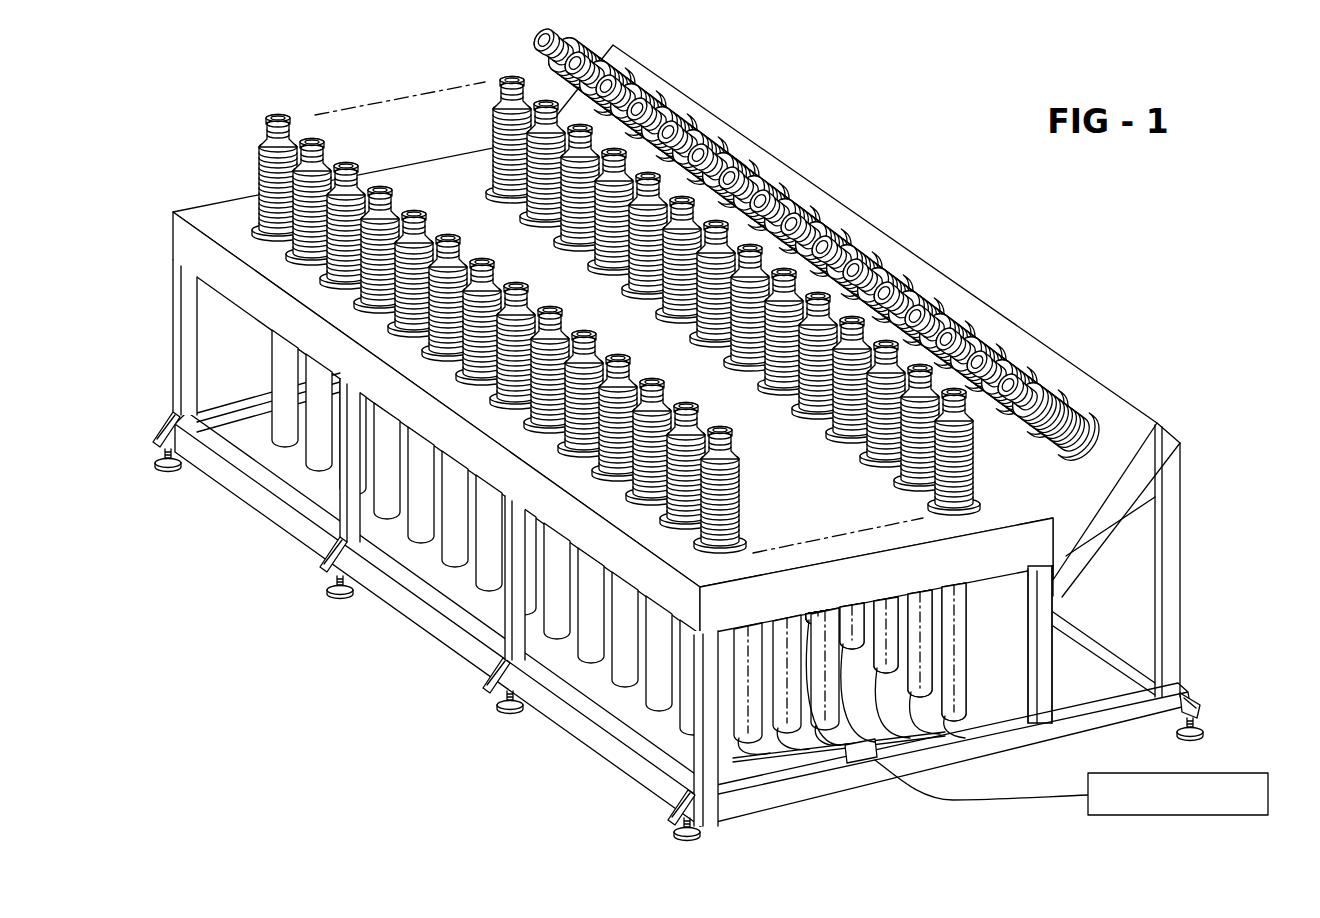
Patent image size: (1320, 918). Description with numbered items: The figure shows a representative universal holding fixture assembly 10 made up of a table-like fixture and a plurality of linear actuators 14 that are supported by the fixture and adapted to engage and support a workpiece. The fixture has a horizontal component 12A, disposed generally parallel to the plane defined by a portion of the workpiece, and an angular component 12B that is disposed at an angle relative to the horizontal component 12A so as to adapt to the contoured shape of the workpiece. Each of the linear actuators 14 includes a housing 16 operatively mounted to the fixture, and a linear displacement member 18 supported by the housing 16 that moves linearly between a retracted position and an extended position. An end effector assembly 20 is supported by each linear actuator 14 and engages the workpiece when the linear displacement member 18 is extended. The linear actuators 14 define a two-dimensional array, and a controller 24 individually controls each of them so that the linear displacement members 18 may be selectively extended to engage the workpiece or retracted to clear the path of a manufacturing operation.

The universal holding fixture assembly 10 is at (1048, 294).
The horizontal component 12A is at (220, 215).
The angular component 12B is at (1118, 422).
The linear actuators 14 is at (759, 165).
The housing 16 is at (425, 505).
The linear displacement member 18 is at (510, 222).
The end effector assembly 20 is at (285, 116).
The controller 24 is at (1238, 773).